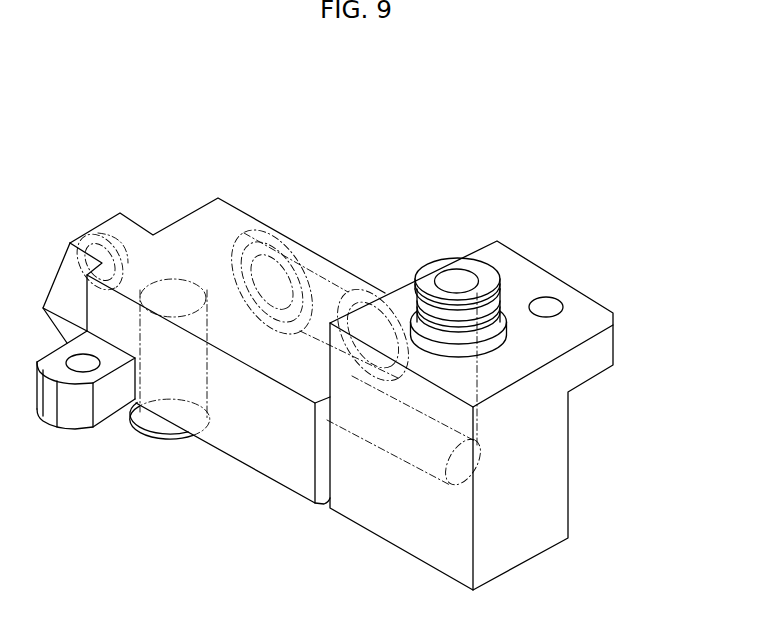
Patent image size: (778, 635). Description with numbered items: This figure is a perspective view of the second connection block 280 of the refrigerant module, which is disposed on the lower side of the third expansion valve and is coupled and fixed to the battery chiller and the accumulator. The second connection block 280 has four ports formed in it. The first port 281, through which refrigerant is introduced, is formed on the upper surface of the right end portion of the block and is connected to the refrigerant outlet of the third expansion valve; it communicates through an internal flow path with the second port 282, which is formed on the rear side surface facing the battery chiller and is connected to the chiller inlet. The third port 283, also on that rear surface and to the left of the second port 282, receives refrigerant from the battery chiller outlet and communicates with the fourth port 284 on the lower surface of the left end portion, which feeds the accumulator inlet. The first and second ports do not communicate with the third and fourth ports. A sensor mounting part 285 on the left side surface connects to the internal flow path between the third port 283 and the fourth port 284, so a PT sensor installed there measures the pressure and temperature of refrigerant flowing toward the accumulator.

The second connection block 280 is at (540, 278).
The first port 281 is at (422, 257).
The second port 282 is at (342, 250).
The third port 283 is at (255, 218).
The fourth port 284 is at (148, 438).
The sensor mounting part 285 is at (120, 213).